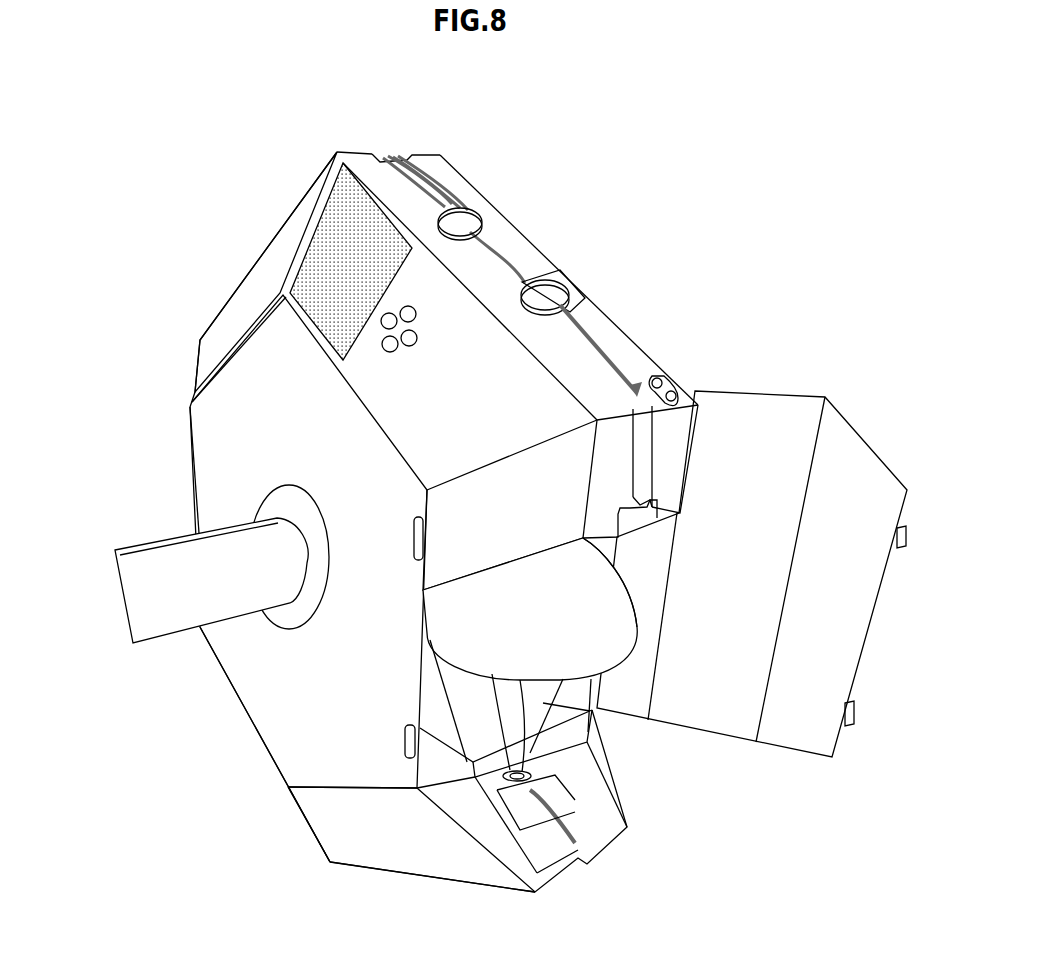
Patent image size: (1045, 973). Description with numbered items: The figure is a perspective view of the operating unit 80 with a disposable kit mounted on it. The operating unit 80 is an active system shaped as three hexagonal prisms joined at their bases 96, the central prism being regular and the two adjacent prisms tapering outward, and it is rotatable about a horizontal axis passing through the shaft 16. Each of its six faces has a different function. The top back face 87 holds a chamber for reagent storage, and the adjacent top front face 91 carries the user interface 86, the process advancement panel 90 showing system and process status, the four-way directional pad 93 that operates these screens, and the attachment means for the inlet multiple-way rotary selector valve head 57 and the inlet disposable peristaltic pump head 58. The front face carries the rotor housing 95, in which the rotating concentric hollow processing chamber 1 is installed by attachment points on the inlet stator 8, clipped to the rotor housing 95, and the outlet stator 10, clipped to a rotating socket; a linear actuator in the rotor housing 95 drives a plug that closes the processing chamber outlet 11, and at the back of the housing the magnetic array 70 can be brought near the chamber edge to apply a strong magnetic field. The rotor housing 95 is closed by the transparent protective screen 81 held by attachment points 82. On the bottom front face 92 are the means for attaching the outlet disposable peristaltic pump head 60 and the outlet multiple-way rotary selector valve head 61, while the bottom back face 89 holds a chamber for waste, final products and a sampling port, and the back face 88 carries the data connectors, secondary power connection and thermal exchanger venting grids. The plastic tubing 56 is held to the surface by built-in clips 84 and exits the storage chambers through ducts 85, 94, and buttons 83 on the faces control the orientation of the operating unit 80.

The rotating concentric hollow processing chamber 1 is at (515, 580).
The inlet stator 8 is at (570, 552).
The outlet stator 10 is at (510, 780).
The processing chamber outlet 11 is at (627, 832).
The shaft 16 is at (120, 597).
The plastic tubing 56 is at (443, 180).
The inlet multiple-way rotary selector valve head 57 is at (490, 222).
The inlet disposable peristaltic pump head 58 is at (545, 290).
The outlet disposable peristaltic pump head 60 is at (480, 890).
The outlet multiple-way rotary selector valve head 61 is at (373, 877).
The magnetic array 70 is at (433, 663).
The operating unit 80 is at (166, 363).
The transparent protective screen 81 is at (792, 752).
The attachment points 82 is at (860, 717).
The buttons 83 is at (676, 383).
The built-in clips 84 is at (623, 365).
The duct 85 is at (400, 153).
The user interface 86 is at (332, 163).
The top back face 87 is at (247, 263).
The back face 88 is at (188, 458).
The bottom back face 89 is at (255, 745).
The process advancement panel 90 is at (490, 203).
The top front face 91 is at (628, 328).
The bottom front face 92 is at (513, 900).
The four-way directional pad 93 is at (413, 357).
The duct 94 is at (333, 872).
The rotor housing 95 is at (630, 808).
The bases 96 is at (357, 147).